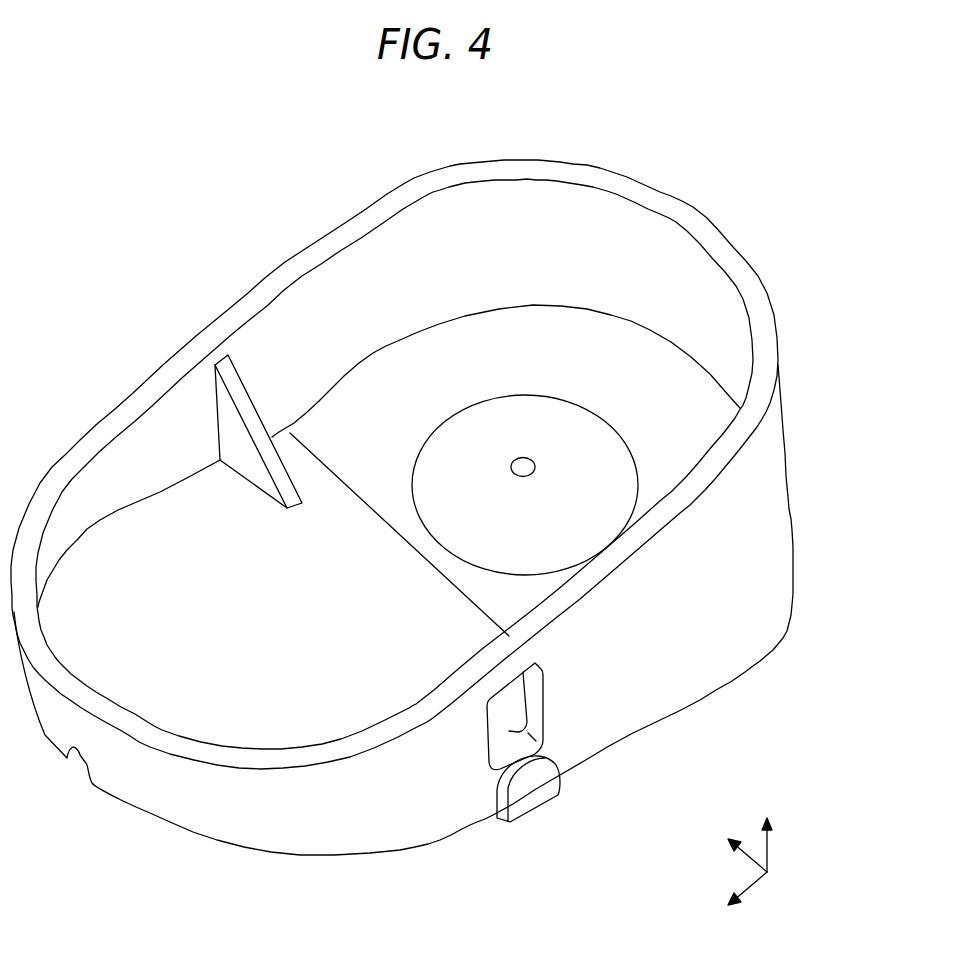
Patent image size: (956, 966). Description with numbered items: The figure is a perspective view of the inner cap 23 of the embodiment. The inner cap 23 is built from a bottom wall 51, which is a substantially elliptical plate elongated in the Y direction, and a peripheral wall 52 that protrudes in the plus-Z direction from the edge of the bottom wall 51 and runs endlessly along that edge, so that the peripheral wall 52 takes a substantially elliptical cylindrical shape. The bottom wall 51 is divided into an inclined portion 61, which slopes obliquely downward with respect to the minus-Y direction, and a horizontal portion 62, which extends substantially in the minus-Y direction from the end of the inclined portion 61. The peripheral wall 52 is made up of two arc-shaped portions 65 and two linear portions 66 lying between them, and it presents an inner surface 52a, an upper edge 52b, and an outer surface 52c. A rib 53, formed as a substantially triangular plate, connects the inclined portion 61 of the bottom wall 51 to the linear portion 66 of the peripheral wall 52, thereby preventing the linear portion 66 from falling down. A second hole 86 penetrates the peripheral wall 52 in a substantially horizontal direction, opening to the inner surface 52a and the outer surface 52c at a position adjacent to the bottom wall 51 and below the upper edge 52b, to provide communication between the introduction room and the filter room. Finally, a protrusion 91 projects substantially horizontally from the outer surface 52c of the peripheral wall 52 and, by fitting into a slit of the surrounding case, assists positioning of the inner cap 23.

The inner cap 23 is at (163, 251).
The bottom wall 51 is at (150, 694).
The peripheral wall 52 is at (558, 173).
The inner surface 52a is at (465, 217).
The upper edge 52b is at (394, 424).
The outer surface 52c is at (767, 522).
The rib 53 is at (240, 405).
The inclined portion 61 is at (250, 702).
The horizontal portion 62 is at (635, 362).
The arc-shaped portion 65 is at (742, 251).
The linear portion 66 is at (205, 347).
The second hole 86 is at (532, 691).
The protrusion 91 is at (532, 795).